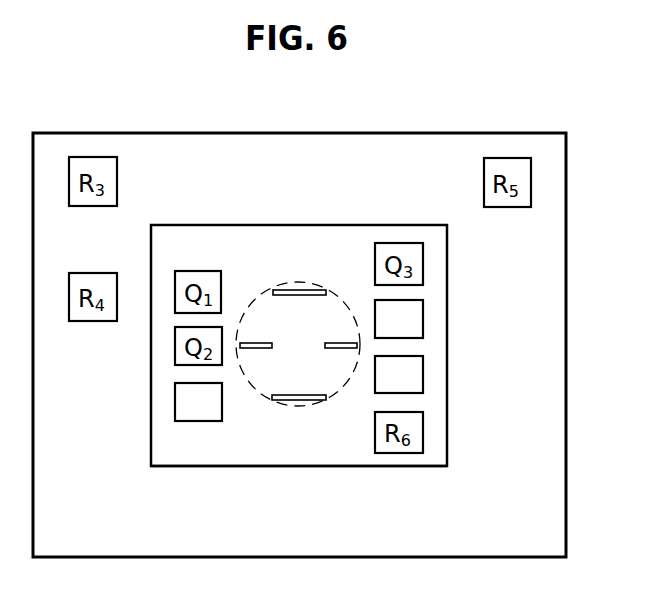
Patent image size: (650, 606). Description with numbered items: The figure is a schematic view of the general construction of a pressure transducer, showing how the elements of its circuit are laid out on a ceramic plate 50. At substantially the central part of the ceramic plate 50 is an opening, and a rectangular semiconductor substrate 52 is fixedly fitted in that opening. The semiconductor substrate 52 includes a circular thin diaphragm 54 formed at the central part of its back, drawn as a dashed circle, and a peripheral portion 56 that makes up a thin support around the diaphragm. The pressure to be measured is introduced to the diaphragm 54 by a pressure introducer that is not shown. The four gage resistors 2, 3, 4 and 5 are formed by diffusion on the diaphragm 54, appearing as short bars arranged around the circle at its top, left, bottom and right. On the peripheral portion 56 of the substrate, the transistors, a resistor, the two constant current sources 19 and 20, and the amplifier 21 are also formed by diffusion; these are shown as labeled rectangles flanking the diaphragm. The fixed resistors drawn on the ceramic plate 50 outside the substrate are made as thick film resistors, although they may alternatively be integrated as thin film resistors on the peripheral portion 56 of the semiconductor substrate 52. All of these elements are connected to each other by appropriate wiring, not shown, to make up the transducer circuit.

The ceramic plate 50 is at (562, 166).
The semiconductor substrate 52 is at (289, 228).
The diaphragm 54 is at (342, 390).
The peripheral portion 56 is at (244, 467).
The gage resistor 2 is at (310, 292).
The gage resistor 3 is at (255, 342).
The gage resistor 4 is at (283, 401).
The gage resistor 5 is at (350, 348).
The constant current source 19 is at (198, 402).
The constant current source 20 is at (399, 319).
The amplifier 21 is at (399, 374).